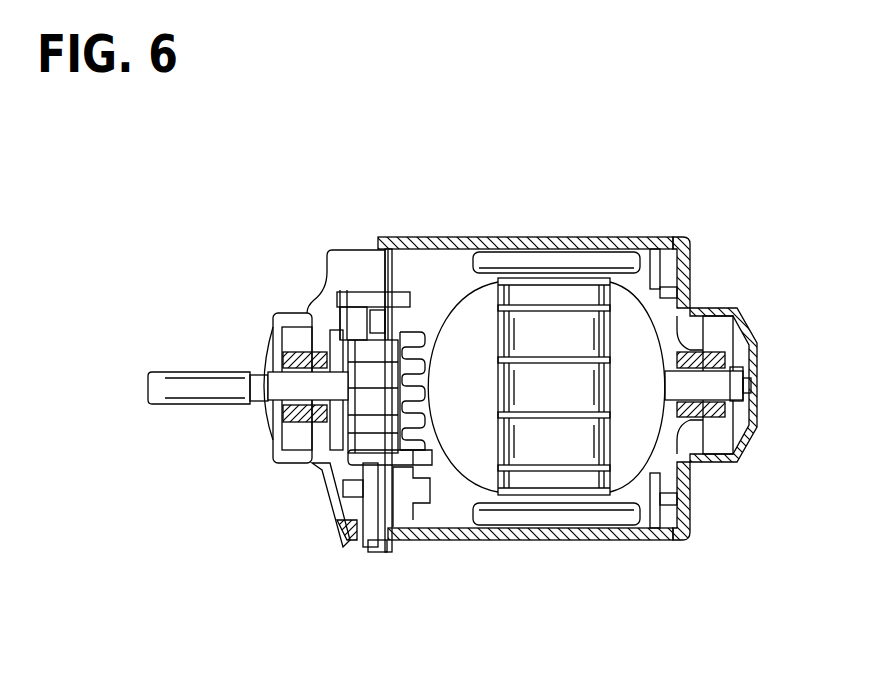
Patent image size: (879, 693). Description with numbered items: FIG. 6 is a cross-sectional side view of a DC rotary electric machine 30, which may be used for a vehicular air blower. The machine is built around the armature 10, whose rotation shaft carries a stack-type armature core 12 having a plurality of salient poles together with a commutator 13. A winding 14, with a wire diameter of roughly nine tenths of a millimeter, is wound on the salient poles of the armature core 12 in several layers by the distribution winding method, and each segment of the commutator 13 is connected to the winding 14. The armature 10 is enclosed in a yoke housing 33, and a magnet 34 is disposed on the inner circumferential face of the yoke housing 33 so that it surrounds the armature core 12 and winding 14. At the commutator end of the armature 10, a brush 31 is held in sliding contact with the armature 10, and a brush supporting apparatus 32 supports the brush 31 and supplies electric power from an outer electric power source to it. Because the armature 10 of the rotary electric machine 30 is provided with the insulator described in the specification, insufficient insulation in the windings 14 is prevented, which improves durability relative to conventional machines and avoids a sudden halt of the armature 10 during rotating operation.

The armature 10 is at (528, 395).
The armature core 12 is at (553, 483).
The commutator 13 is at (363, 347).
The winding 14 is at (458, 483).
The rotary electric machine 30 is at (514, 172).
The brush 31 is at (357, 300).
The brush supporting apparatus 32 is at (327, 465).
The yoke housing 33 is at (592, 237).
The magnet 34 is at (622, 260).